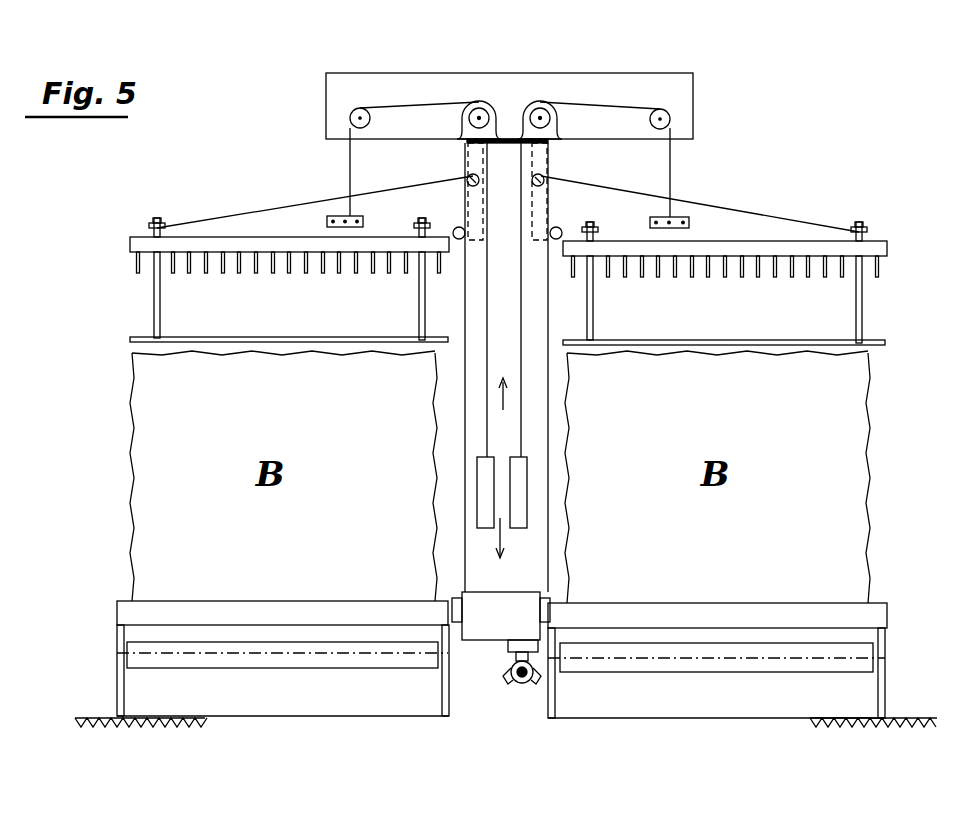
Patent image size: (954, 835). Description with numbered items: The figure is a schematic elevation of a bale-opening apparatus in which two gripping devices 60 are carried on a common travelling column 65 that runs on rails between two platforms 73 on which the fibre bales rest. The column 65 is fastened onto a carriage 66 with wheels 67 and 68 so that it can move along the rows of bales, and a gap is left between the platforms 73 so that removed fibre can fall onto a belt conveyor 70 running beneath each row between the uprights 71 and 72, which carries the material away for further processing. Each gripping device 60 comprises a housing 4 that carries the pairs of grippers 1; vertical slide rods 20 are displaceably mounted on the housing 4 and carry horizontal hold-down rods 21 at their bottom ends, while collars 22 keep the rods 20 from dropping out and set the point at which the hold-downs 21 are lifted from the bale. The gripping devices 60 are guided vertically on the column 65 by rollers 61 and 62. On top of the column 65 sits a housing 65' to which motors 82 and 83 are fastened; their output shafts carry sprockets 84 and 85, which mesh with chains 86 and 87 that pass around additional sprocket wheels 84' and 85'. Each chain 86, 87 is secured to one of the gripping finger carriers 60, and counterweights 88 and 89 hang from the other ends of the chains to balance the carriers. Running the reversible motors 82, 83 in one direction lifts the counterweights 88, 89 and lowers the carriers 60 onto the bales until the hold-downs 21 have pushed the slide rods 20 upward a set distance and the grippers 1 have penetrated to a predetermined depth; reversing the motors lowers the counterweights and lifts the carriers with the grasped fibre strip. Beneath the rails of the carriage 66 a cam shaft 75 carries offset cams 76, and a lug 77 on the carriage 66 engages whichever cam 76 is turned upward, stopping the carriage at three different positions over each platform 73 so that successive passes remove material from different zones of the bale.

The gripper 1 is at (320, 276).
The housing 4 is at (283, 252).
The vertical slide rod 20 is at (160, 308).
The hold-down rod 21 is at (338, 340).
The collar 22 is at (150, 226).
The gripping device 60 is at (337, 210).
The roller 61 is at (467, 178).
The roller 62 is at (459, 240).
The column 65 is at (506, 365).
The housing 65' is at (509, 77).
The carriage 66 is at (520, 612).
The wheel 67 is at (460, 592).
The wheel 68 is at (544, 590).
The belt conveyor 70 is at (268, 660).
The upright 71 is at (120, 680).
The upright 72 is at (445, 690).
The platform 73 is at (130, 613).
The cam shaft 75 is at (525, 684).
The cam 76 is at (506, 680).
The lug 77 is at (558, 628).
The motor 82 is at (552, 102).
The motor 83 is at (474, 108).
The sprocket 84 is at (583, 88).
The sprocket wheel 84' is at (706, 91).
The sprocket 85 is at (446, 85).
The sprocket wheel 85' is at (319, 92).
The chain 86 is at (627, 107).
The chain 87 is at (395, 106).
The counterweight 88 is at (519, 480).
The counterweight 89 is at (485, 478).